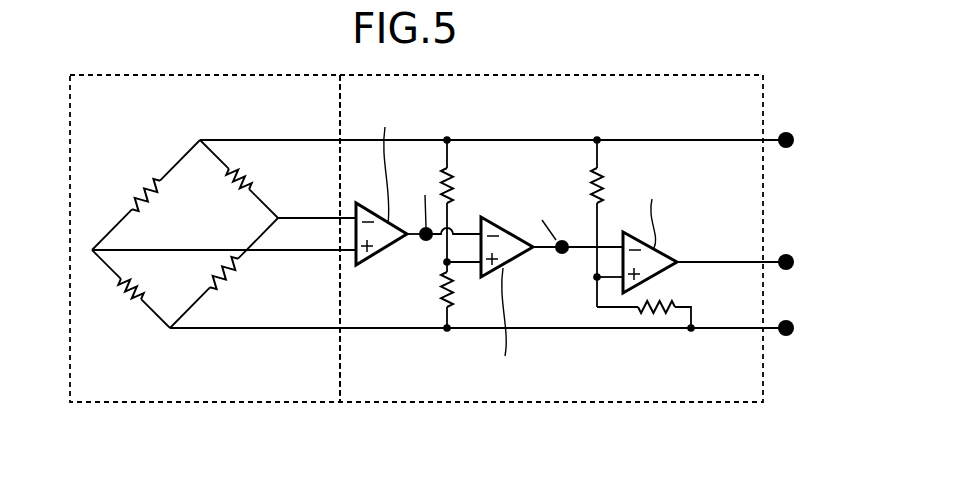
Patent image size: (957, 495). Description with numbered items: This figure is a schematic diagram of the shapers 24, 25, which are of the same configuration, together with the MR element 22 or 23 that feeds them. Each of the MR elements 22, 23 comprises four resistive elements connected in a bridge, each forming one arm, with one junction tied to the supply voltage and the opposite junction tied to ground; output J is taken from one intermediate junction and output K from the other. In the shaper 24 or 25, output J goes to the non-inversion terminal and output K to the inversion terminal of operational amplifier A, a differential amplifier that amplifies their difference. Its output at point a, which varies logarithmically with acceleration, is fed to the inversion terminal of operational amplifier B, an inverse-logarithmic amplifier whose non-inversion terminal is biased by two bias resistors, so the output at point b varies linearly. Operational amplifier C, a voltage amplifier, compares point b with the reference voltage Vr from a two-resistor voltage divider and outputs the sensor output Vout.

The MR element 22 is at (213, 273).
The MR element 23 is at (222, 402).
The shaper 24 is at (511, 273).
The shaper 25 is at (573, 402).